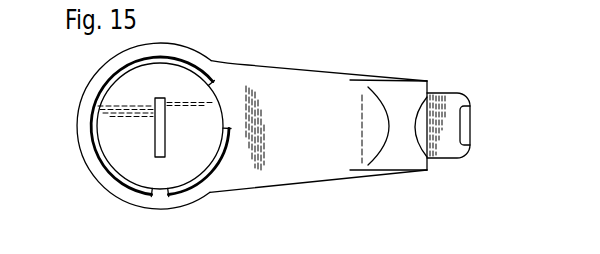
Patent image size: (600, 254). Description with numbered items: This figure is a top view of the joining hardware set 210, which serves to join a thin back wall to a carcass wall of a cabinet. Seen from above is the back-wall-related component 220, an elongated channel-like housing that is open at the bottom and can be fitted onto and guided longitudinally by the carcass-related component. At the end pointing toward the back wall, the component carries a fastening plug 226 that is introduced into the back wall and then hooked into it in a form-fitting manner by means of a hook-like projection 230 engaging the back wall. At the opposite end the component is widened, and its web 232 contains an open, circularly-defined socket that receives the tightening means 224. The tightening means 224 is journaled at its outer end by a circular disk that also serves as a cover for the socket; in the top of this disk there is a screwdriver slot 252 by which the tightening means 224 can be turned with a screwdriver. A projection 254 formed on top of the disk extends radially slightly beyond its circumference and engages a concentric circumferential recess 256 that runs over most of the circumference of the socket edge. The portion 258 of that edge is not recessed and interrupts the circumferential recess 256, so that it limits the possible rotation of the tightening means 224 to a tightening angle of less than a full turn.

The joining hardware set 210 is at (390, 66).
The back-wall-related component 220 is at (318, 68).
The tightening means 224 is at (100, 97).
The fastening plug 226 is at (447, 150).
The hook-like projection 230 is at (470, 113).
The web 232 is at (302, 118).
The screwdriver slot 252 is at (155, 148).
The projection 254 is at (157, 196).
The circumferential recess 256 is at (93, 145).
The non-recessed portion 258 is at (223, 103).